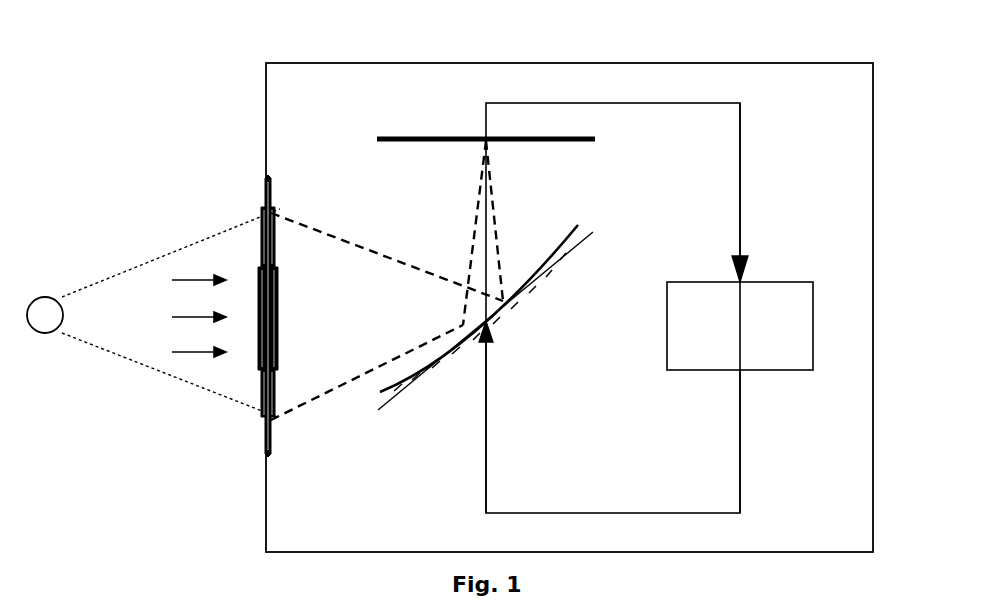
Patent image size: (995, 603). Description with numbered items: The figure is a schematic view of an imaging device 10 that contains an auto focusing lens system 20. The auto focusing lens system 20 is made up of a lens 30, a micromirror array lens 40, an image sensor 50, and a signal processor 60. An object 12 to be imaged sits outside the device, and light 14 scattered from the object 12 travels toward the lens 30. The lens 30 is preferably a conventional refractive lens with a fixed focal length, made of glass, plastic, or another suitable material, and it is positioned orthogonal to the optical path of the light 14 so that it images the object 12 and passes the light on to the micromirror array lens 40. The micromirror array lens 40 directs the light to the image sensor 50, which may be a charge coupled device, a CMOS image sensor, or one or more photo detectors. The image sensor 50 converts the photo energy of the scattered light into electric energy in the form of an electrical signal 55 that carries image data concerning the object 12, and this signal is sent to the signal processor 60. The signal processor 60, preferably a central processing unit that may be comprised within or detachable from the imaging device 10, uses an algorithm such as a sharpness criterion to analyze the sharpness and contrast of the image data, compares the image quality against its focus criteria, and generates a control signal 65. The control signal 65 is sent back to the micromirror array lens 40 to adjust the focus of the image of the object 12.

The imaging device 10 is at (412, 62).
The object 12 is at (30, 296).
The light 14 is at (190, 352).
The auto focusing lens system 20 is at (758, 152).
The lens 30 is at (270, 318).
The micromirror array lens 40 is at (522, 288).
The image sensor 50 is at (545, 141).
The electrical signal 55 is at (745, 208).
The signal processor 60 is at (668, 367).
The control signal 65 is at (720, 513).